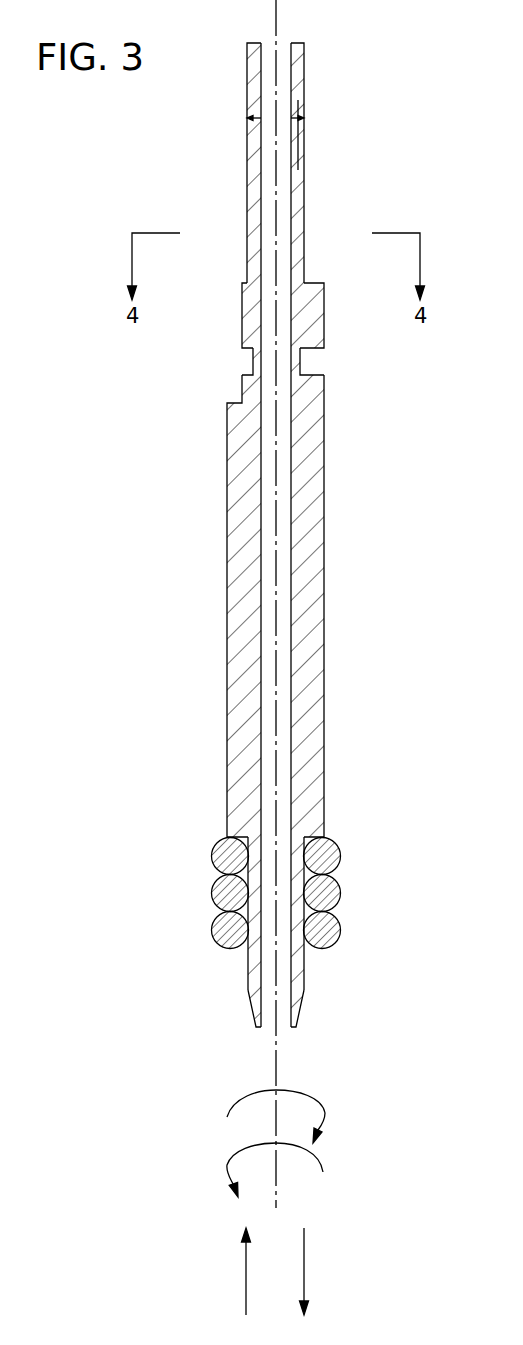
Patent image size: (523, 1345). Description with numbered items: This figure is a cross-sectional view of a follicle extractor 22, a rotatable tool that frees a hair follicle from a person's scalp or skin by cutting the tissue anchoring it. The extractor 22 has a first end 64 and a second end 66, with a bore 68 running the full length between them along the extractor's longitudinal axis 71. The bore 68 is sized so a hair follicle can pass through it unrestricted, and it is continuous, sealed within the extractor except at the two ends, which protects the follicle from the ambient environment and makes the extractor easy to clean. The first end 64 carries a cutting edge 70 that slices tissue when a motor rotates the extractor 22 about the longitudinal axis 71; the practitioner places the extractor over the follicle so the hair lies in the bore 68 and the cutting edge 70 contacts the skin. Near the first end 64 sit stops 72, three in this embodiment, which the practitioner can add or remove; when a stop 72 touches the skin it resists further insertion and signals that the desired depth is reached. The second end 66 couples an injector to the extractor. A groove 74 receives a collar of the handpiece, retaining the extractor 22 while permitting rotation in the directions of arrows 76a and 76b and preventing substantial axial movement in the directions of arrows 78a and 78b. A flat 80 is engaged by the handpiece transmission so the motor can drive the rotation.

The follicle extractor 22 is at (349, 595).
The first end 64 is at (226, 1031).
The second end 66 is at (320, 83).
The bore 68 is at (267, 85).
The cutting edge 70 is at (280, 1027).
The longitudinal axis 71 is at (277, 3).
The stop 72 is at (212, 930).
The groove 74 is at (253, 361).
The arrow 76a is at (302, 1092).
The arrow 76b is at (242, 1150).
The arrow 78a is at (246, 1280).
The arrow 78b is at (304, 1258).
The flat 80 is at (242, 303).